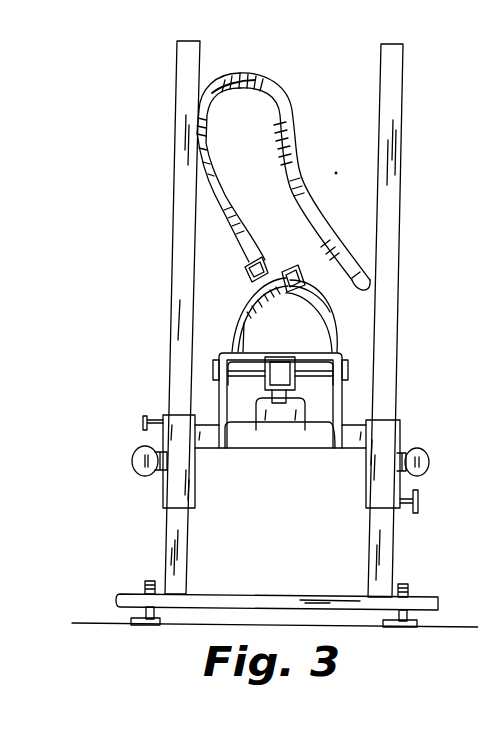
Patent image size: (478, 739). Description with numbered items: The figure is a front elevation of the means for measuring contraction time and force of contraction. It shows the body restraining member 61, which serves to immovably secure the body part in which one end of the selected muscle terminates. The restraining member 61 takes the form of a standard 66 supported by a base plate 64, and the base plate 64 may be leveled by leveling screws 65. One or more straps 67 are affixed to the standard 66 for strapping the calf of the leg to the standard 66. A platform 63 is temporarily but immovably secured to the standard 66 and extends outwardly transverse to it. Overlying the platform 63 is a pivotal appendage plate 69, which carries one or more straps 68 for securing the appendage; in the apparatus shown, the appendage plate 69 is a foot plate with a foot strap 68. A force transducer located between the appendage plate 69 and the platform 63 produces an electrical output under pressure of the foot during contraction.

The body restraining member 61 is at (175, 103).
The platform 63 is at (287, 425).
The base plate 64 is at (323, 603).
The leveling screws 65 is at (410, 590).
The standard 66 is at (405, 73).
The straps 67 is at (265, 82).
The straps 68 is at (316, 310).
The pivotal appendage plate 69 is at (246, 318).